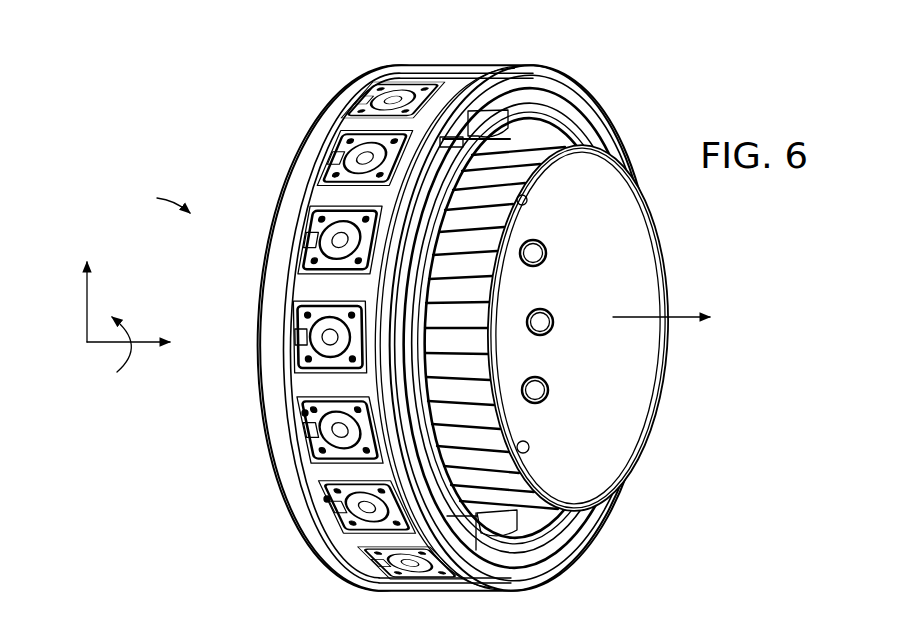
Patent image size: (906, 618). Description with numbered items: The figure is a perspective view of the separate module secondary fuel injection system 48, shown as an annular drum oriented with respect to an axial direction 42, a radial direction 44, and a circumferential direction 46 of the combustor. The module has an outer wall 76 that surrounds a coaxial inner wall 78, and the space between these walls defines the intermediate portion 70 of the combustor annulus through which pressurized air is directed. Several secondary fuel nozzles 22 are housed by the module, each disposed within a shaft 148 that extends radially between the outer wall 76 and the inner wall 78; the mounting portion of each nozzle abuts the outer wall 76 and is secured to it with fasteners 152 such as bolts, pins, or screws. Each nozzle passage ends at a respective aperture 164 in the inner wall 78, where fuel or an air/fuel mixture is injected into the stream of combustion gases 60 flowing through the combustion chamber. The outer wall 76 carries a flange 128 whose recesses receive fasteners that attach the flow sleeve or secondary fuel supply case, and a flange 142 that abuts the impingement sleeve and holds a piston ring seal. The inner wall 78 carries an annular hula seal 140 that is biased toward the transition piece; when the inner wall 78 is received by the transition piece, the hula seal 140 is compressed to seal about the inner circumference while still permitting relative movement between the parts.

The secondary fuel nozzle 22 is at (360, 110).
The axial direction 42 is at (105, 345).
The radial direction 44 is at (82, 303).
The circumferential direction 46 is at (132, 325).
The separate module secondary fuel injection system 48 is at (158, 198).
The stream of combustion gases 60 is at (683, 316).
The intermediate portion 70 is at (450, 151).
The outer wall 76 is at (310, 383).
The inner wall 78 is at (613, 440).
The flange 128 is at (266, 331).
The hula seal 140 is at (503, 163).
The flange 142 is at (530, 77).
The shaft 148 is at (495, 130).
The fasteners 152 is at (327, 500).
The aperture 164 is at (535, 255).